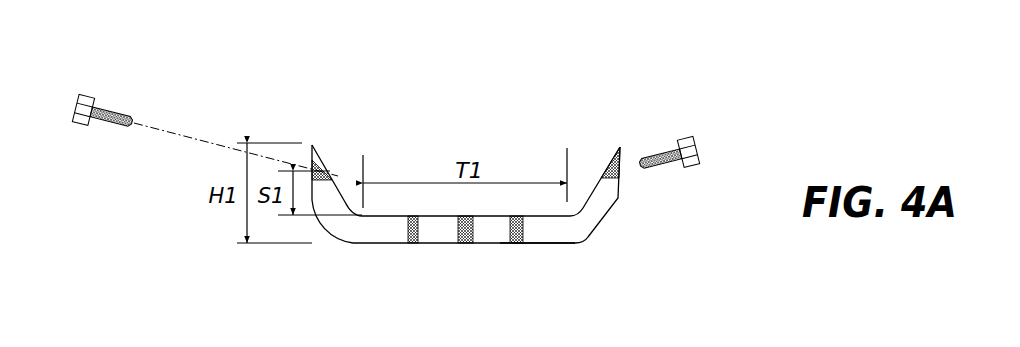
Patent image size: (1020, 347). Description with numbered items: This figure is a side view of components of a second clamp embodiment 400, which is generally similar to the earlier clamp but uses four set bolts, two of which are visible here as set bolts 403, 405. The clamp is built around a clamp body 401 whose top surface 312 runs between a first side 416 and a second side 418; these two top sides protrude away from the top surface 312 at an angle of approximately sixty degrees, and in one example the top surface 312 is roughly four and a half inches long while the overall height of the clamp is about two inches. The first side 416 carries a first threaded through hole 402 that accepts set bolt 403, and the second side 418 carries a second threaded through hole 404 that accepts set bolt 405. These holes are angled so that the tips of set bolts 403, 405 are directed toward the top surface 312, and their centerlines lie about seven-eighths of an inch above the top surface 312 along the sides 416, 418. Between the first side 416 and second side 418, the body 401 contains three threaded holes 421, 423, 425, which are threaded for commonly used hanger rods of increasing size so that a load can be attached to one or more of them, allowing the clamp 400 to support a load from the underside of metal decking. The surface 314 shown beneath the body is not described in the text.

The second clamp embodiment 400 is at (437, 49).
The clamp body 401 is at (445, 119).
The first threaded through hole 402 is at (311, 170).
The set bolt 403 is at (105, 131).
The second threaded through hole 404 is at (621, 157).
The set bolt 405 is at (647, 167).
The first side 416 is at (323, 162).
The second side 418 is at (606, 158).
The top surface 312 is at (374, 216).
The mounting surface 314 is at (535, 246).
The threaded hole 421 is at (417, 243).
The threaded hole 423 is at (473, 243).
The threaded hole 425 is at (513, 243).